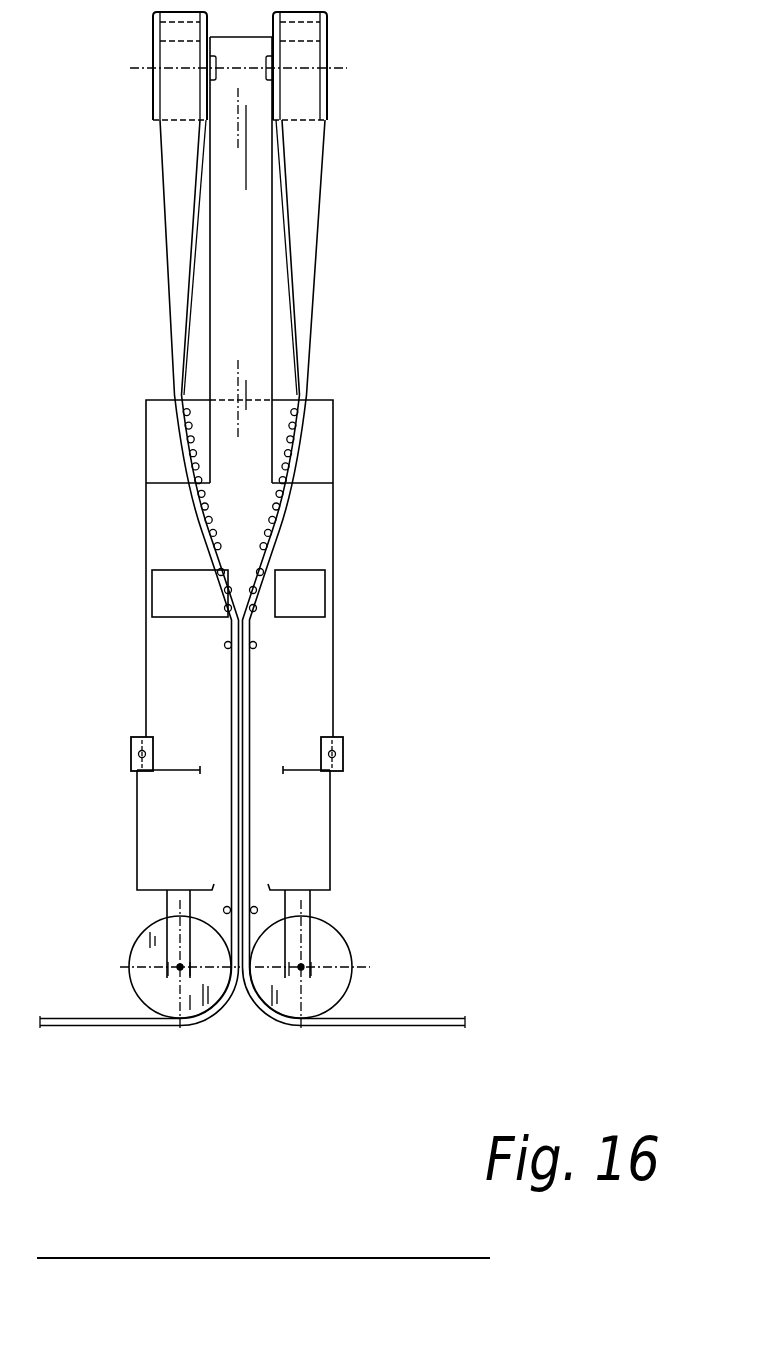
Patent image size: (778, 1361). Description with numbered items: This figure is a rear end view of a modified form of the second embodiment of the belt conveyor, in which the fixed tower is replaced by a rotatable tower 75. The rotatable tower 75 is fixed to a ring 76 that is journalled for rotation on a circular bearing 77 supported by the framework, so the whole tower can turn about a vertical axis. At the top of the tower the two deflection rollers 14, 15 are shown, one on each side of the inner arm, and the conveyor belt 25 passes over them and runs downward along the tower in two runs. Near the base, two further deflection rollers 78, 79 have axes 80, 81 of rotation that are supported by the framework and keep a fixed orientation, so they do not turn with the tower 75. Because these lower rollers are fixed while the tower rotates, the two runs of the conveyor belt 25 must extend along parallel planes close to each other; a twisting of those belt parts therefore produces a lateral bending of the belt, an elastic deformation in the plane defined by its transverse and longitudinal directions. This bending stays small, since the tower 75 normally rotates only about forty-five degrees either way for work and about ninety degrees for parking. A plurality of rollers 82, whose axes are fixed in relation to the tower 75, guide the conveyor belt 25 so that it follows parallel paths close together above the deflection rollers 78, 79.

The deflection roller 14 is at (153, 45).
The deflection roller 15 is at (327, 38).
The conveyor belt 25 is at (305, 186).
The rotatable tower 75 is at (254, 310).
The ring 76 is at (333, 548).
The circular bearing 77 is at (343, 742).
The deflection roller 78 is at (140, 946).
The deflection roller 79 is at (328, 940).
The axis of rotation 80 is at (178, 967).
The axis of rotation 81 is at (302, 967).
The rollers 82 is at (225, 648).